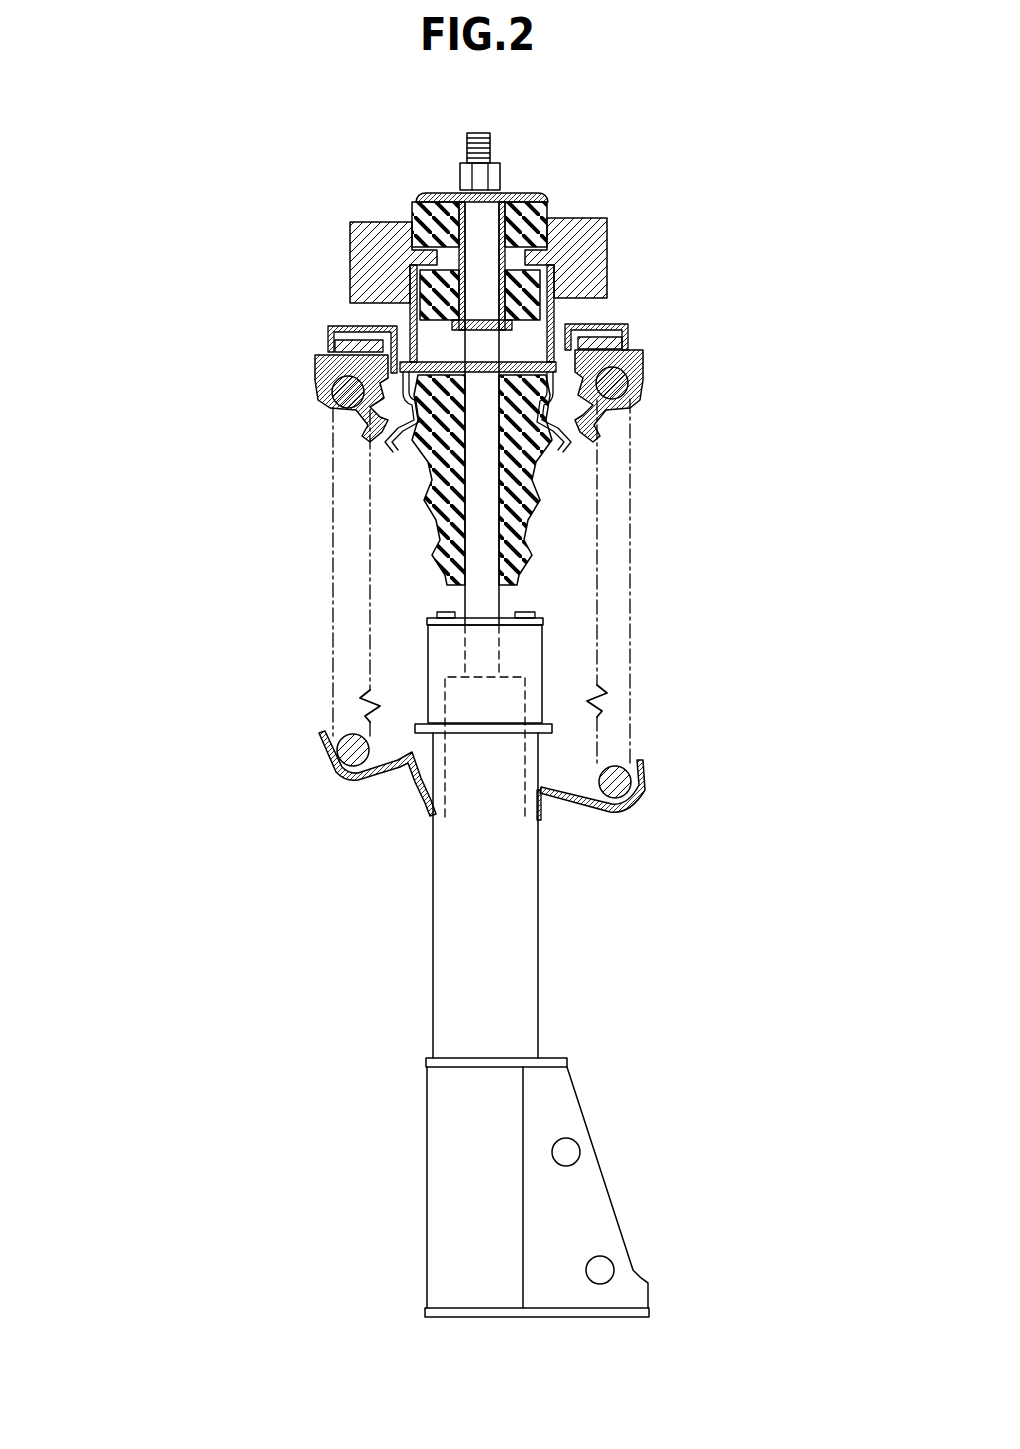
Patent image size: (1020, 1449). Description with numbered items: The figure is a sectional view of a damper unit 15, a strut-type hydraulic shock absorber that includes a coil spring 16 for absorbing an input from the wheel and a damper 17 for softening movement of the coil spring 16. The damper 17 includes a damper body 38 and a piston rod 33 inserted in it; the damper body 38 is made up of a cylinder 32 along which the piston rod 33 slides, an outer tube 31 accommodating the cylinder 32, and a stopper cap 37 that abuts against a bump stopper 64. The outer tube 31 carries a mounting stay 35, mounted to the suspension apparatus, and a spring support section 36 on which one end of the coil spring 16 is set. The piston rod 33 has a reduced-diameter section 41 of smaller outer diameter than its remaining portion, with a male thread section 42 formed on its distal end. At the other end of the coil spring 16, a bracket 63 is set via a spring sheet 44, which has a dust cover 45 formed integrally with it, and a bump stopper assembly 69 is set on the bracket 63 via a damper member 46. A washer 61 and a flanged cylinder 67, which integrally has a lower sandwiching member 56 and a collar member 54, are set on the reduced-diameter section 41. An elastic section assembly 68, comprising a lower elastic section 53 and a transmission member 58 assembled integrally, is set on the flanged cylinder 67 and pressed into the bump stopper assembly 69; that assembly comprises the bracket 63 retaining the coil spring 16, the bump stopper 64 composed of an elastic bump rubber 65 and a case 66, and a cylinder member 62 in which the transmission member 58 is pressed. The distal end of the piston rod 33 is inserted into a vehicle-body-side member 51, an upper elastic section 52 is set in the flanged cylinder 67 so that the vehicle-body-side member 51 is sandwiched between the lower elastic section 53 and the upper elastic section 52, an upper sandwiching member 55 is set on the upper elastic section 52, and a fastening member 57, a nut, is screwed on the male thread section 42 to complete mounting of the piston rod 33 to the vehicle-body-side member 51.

The damper unit 15 is at (208, 192).
The coil spring 16 is at (640, 503).
The damper 17 is at (580, 930).
The outer tube 31 is at (545, 868).
The cylinder 32 is at (553, 739).
The piston rod 33 is at (510, 597).
The mounting stay 35 is at (597, 1192).
The spring support section 36 is at (334, 748).
The stopper cap 37 is at (545, 650).
The damper body 38 is at (720, 882).
The reduced-diameter section 41 is at (486, 229).
The male thread section 42 is at (488, 146).
The spring sheet 44 is at (648, 357).
The dust cover 45 is at (597, 462).
The damper member 46 is at (632, 329).
The vehicle-body-side member 51 is at (378, 218).
The upper elastic section 52 is at (414, 222).
The lower elastic section 53 is at (508, 280).
The collar member 54 is at (452, 263).
The upper sandwiching member 55 is at (445, 192).
The lower sandwiching member 56 is at (440, 318).
The fastening member 57 is at (498, 178).
The transmission member 58 is at (512, 322).
The washer 61 is at (407, 330).
The cylinder member 62 is at (342, 383).
The bracket 63 is at (372, 394).
The bump stopper 64 is at (282, 438).
The bump rubber 65 is at (410, 455).
The case 66 is at (395, 428).
The flanged cylinder 67 is at (282, 218).
The elastic section assembly 68 is at (678, 258).
The bump stopper assembly 69 is at (227, 373).